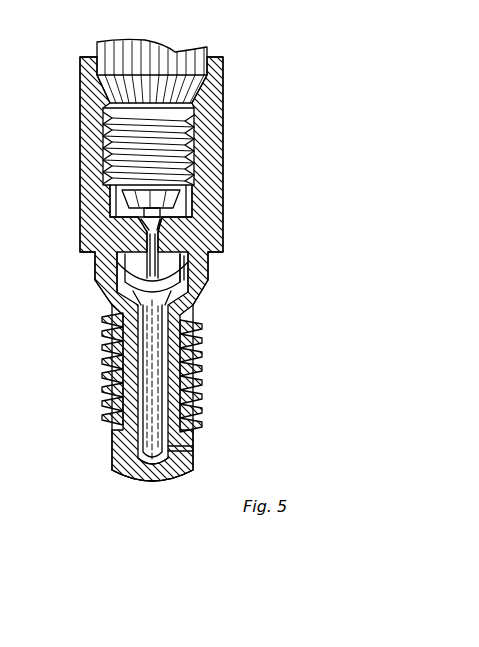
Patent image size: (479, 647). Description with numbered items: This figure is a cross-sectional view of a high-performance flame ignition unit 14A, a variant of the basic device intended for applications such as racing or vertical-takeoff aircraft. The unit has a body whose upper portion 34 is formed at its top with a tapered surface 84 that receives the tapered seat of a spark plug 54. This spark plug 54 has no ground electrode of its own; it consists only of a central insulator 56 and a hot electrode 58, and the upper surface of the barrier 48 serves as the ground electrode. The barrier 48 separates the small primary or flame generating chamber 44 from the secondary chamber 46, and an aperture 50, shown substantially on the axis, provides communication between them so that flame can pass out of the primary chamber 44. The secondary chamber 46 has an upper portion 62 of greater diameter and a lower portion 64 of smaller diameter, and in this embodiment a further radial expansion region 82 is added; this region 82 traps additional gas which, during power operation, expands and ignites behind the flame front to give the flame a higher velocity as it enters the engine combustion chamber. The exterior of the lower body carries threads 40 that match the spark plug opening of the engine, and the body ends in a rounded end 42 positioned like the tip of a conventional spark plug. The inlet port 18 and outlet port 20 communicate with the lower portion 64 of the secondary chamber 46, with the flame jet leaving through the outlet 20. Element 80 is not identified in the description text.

The flame ignition unit 14A is at (238, 181).
The upper portion of the body 34 is at (80, 102).
The spark plug 54 is at (212, 52).
The tapered surface 84 is at (200, 98).
The central insulator 56 is at (176, 200).
The hot electrode 58 is at (186, 212).
The primary chamber 44 is at (150, 228).
The aperture 50 is at (150, 240).
The barrier 48 is at (130, 283).
The radial expansion region 82 is at (186, 276).
The body shoulder 80 is at (206, 299).
The upper portion of the secondary chamber 62 is at (199, 316).
The threads 40 is at (203, 356).
The lower portion of the secondary chamber 64 is at (183, 378).
The secondary chamber 46 is at (157, 334).
The inlet port 18 is at (188, 449).
The outlet port 20 is at (134, 474).
The rounded end 42 is at (163, 484).